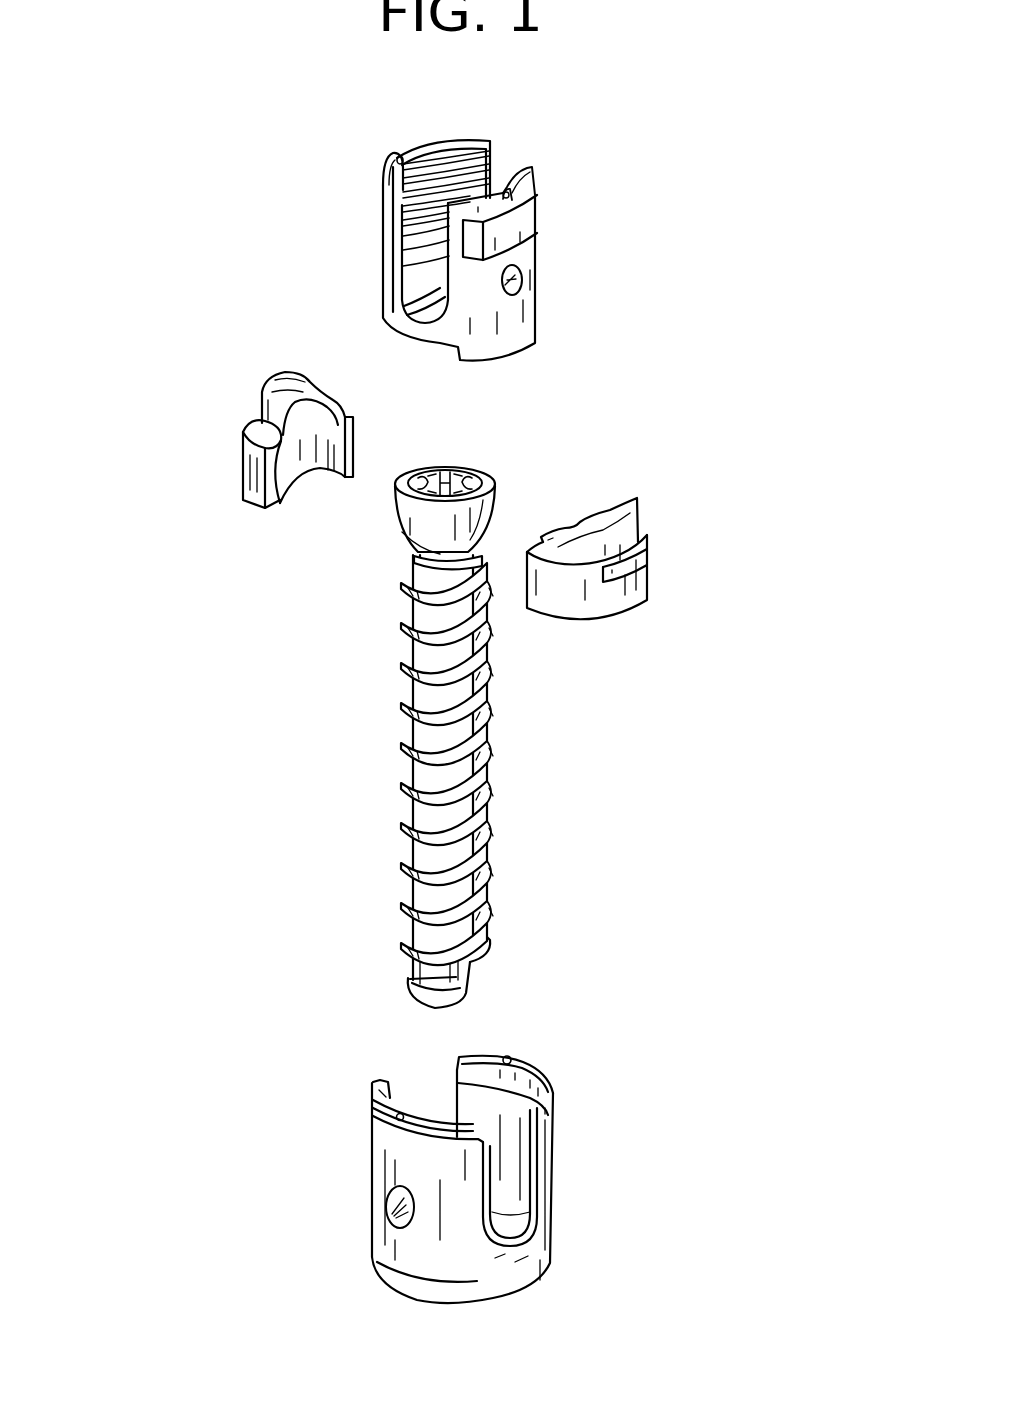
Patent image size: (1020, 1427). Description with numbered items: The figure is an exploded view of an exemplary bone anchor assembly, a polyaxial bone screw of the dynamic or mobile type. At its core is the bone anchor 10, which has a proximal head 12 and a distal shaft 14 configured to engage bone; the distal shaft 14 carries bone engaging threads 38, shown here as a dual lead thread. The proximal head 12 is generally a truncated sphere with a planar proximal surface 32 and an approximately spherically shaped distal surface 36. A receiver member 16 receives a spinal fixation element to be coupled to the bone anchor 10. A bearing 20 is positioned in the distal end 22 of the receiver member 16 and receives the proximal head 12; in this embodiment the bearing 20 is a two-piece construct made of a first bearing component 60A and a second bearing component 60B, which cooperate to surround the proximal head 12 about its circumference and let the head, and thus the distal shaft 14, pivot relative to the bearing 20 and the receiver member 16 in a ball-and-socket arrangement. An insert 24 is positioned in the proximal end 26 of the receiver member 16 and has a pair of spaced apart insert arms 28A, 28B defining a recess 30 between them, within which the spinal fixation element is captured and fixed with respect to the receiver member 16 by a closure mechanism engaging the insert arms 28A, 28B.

The bone anchor 10 is at (339, 706).
The proximal head 12 is at (492, 494).
The distal shaft 14 is at (410, 806).
The receiver member 16 is at (333, 1212).
The bearing 20 is at (216, 458).
The distal end 22 is at (578, 1220).
The insert 24 is at (473, 208).
The proximal end 26 is at (586, 1083).
The insert arm 28A is at (532, 194).
The insert arm 28B is at (385, 192).
The recess 30 is at (513, 154).
The planar proximal surface 32 is at (462, 468).
The distal surface 36 is at (412, 533).
The bone engaging threads 38 is at (486, 666).
The first bearing component 60A is at (636, 497).
The second bearing component 60B is at (260, 412).